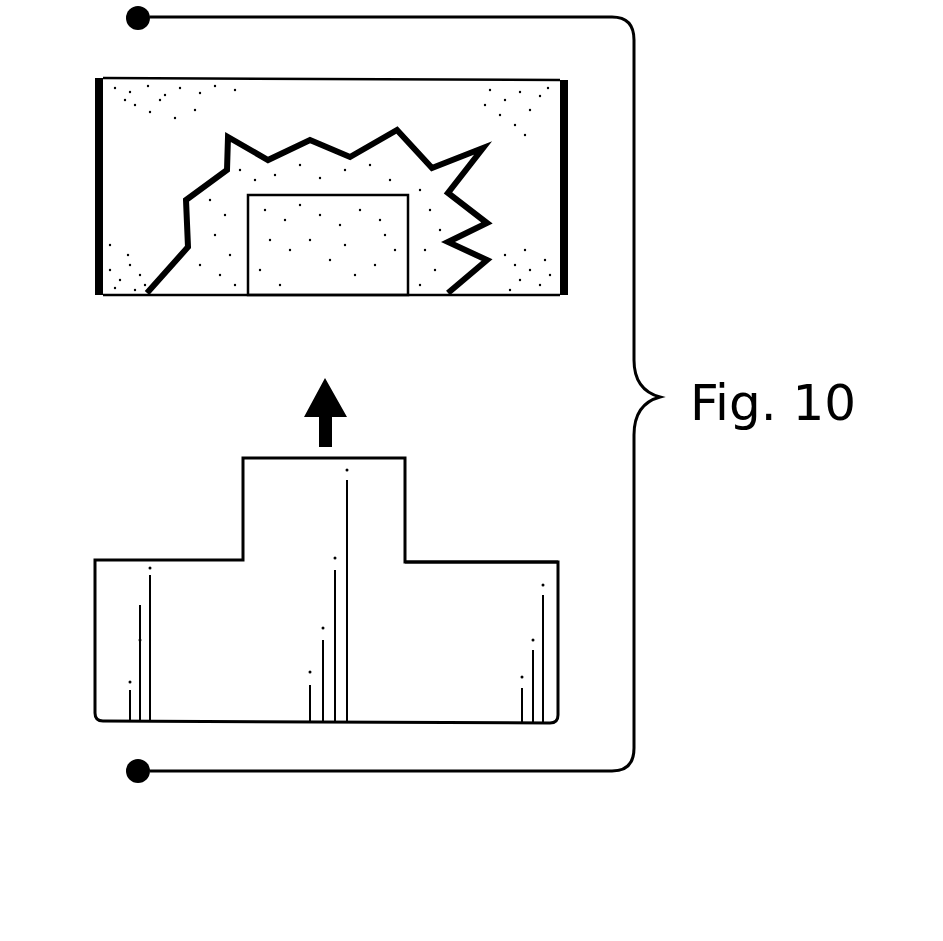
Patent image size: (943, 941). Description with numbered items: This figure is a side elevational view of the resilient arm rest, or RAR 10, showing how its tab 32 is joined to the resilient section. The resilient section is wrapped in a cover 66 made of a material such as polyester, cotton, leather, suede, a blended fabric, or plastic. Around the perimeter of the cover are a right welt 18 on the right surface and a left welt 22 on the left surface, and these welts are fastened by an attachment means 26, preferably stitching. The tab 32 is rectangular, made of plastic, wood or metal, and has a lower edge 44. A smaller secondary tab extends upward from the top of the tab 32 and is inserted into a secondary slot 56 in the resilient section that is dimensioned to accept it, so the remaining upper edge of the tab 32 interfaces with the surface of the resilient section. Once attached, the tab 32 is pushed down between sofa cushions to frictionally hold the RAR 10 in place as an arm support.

The RAR 10 is at (372, 510).
The right welt 18 is at (568, 178).
The left welt 22 is at (95, 163).
The attachment means 26 is at (213, 298).
The tab 32 is at (560, 572).
The lower edge 44 is at (305, 722).
The secondary slot 56 is at (372, 283).
The cover 66 is at (330, 100).